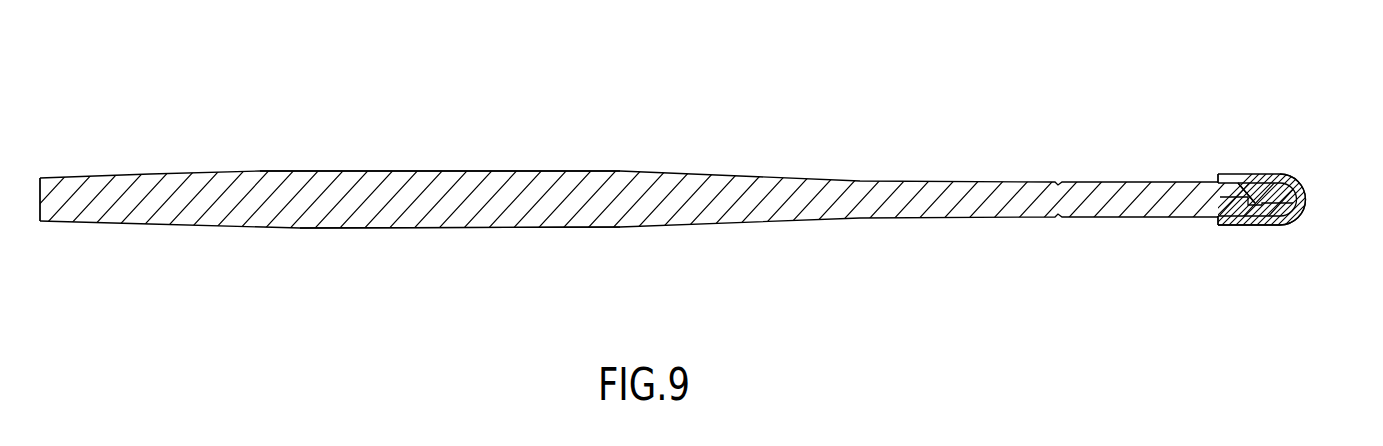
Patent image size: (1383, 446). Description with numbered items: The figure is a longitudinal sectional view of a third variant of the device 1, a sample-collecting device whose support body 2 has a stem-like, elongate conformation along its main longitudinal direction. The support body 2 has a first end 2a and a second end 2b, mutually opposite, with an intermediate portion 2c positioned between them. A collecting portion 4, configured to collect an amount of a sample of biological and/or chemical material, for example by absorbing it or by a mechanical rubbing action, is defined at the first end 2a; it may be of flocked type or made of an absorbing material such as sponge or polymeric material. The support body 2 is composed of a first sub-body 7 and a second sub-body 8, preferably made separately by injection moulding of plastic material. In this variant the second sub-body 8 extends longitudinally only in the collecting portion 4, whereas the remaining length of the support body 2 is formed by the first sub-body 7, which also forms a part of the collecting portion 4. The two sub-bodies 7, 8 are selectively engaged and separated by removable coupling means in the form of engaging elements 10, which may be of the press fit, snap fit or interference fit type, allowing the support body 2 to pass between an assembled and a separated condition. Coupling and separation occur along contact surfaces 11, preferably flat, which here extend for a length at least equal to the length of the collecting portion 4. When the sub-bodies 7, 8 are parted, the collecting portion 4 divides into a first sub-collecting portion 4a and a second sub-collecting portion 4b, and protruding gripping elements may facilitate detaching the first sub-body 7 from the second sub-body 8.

The device 1 is at (1104, 61).
The support body 2 is at (279, 231).
The first end 2a is at (1264, 209).
The second end 2b is at (60, 180).
The intermediate portion 2c is at (479, 172).
The first sub-body 7 is at (642, 232).
The collecting portion 4 is at (1294, 168).
The first sub-collecting portion 4a is at (1299, 217).
The second sub-collecting portion 4b is at (1224, 176).
The second sub-body 8 is at (1253, 196).
The engaging elements 10 is at (1241, 223).
The contact surfaces 11 is at (1299, 189).